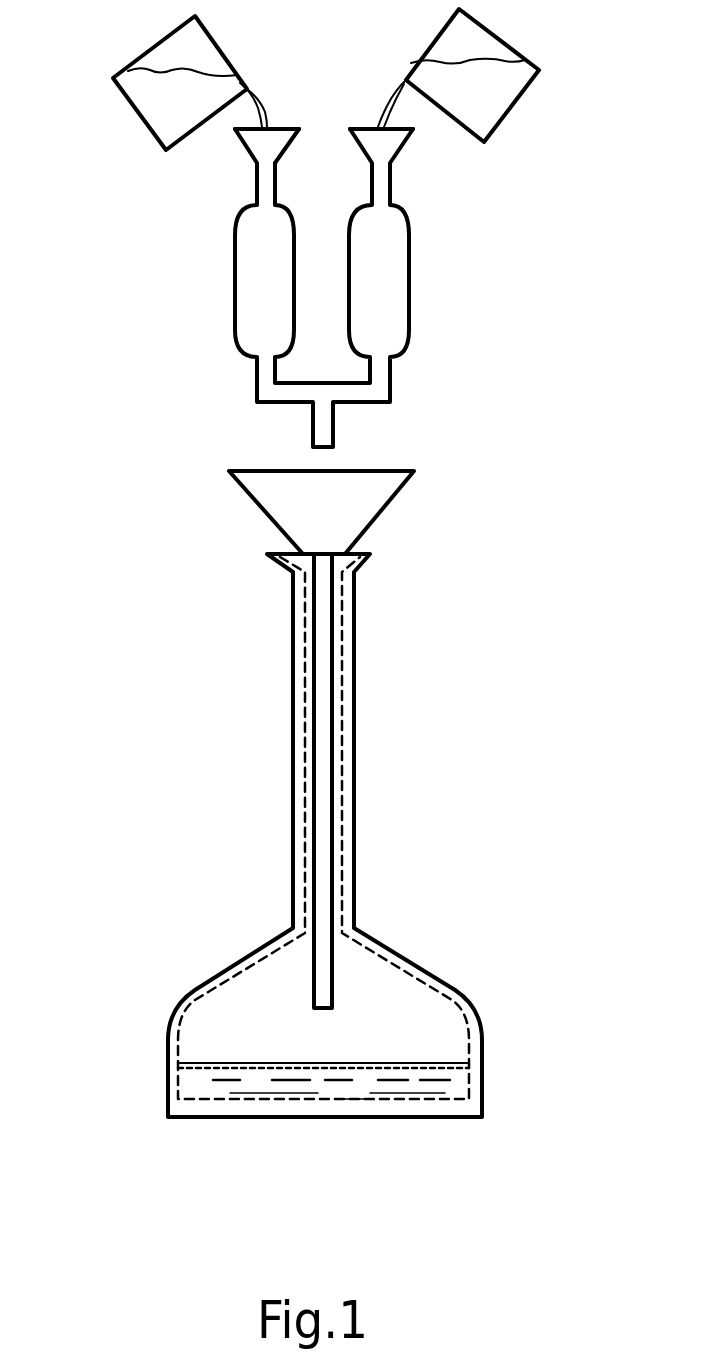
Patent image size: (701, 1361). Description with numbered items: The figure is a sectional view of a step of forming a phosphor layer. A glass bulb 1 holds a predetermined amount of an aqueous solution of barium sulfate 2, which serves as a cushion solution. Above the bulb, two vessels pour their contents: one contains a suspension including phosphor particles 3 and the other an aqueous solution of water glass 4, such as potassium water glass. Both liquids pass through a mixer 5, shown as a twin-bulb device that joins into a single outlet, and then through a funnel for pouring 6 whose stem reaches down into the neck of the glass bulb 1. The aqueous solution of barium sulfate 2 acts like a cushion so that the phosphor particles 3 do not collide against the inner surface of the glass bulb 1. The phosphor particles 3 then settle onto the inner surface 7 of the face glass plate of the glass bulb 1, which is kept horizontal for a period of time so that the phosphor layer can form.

The glass bulb 1 is at (167, 1033).
The aqueous solution of barium sulfate 2 is at (417, 1075).
The phosphor particles 3 is at (128, 62).
The aqueous solution of water glass 4 is at (497, 105).
The mixer 5 is at (400, 298).
The funnel for pouring 6 is at (272, 504).
The inner surface 7 is at (348, 1098).